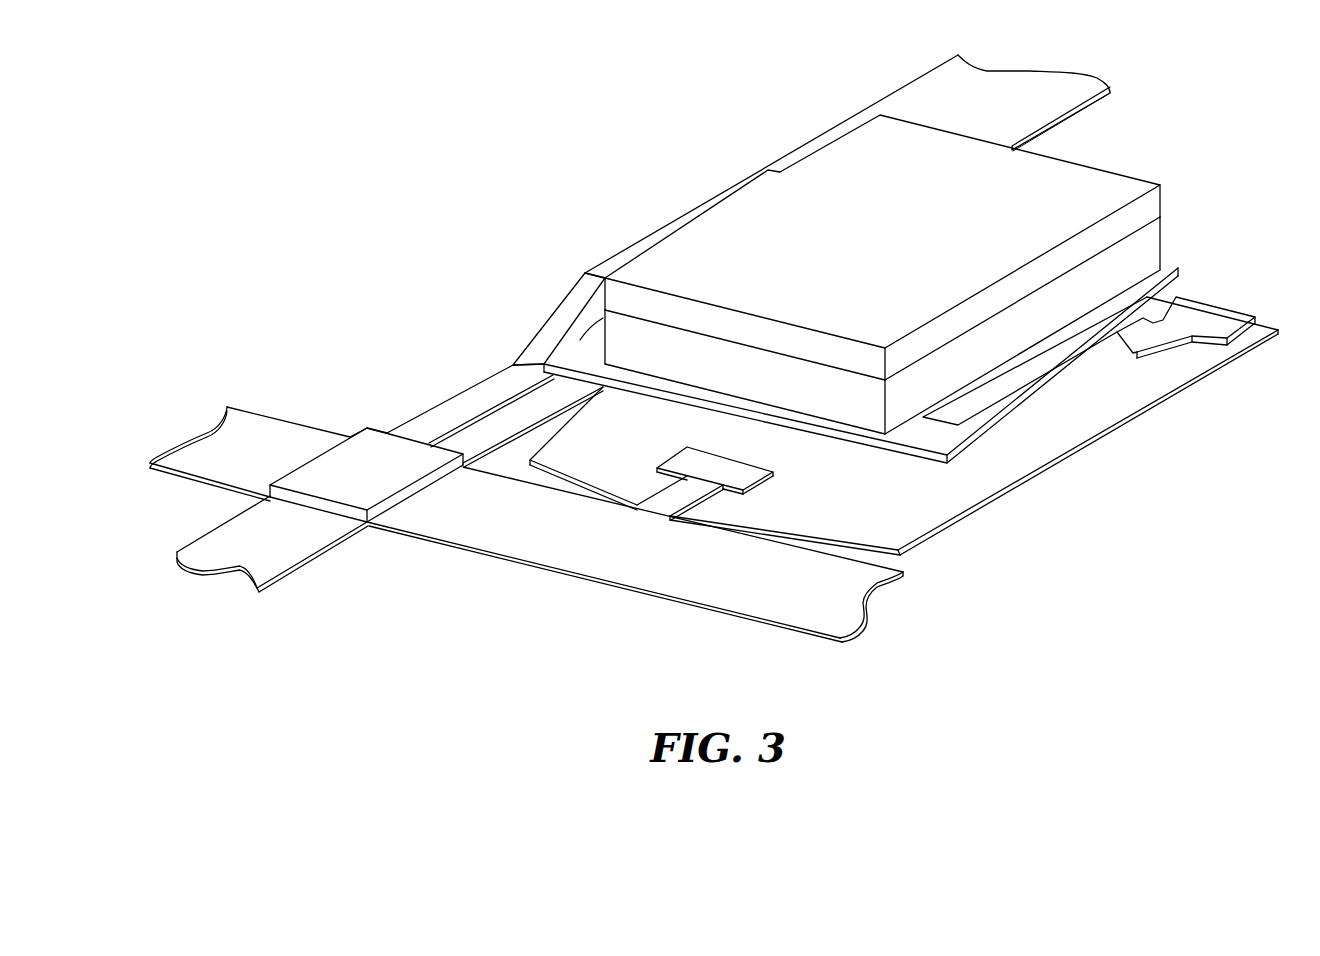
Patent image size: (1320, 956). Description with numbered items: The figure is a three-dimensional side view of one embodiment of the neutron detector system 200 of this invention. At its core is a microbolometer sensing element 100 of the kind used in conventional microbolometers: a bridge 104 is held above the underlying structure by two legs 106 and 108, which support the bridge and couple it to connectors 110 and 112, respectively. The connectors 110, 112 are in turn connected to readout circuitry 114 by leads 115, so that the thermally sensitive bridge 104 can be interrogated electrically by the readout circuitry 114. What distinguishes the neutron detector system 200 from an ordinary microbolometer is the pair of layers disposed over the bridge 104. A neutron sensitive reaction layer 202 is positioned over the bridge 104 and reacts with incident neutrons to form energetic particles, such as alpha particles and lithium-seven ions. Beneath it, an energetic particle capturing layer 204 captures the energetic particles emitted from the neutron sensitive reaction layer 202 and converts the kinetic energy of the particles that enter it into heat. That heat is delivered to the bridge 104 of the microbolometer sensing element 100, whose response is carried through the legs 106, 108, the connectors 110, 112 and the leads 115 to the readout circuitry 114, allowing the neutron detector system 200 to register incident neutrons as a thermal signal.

The microbolometer sensing element 100 is at (866, 314).
The bridge 104 is at (783, 423).
The leg 106 is at (1043, 390).
The leg 108 is at (535, 330).
The connector 110 is at (1222, 318).
The connector 112 is at (384, 485).
The readout circuitry 114 is at (935, 514).
The leads 115 is at (808, 603).
The neutron detector system 200 is at (610, 134).
The neutron sensitive reaction layer 202 is at (1153, 205).
The energetic particle capturing layer 204 is at (1153, 250).